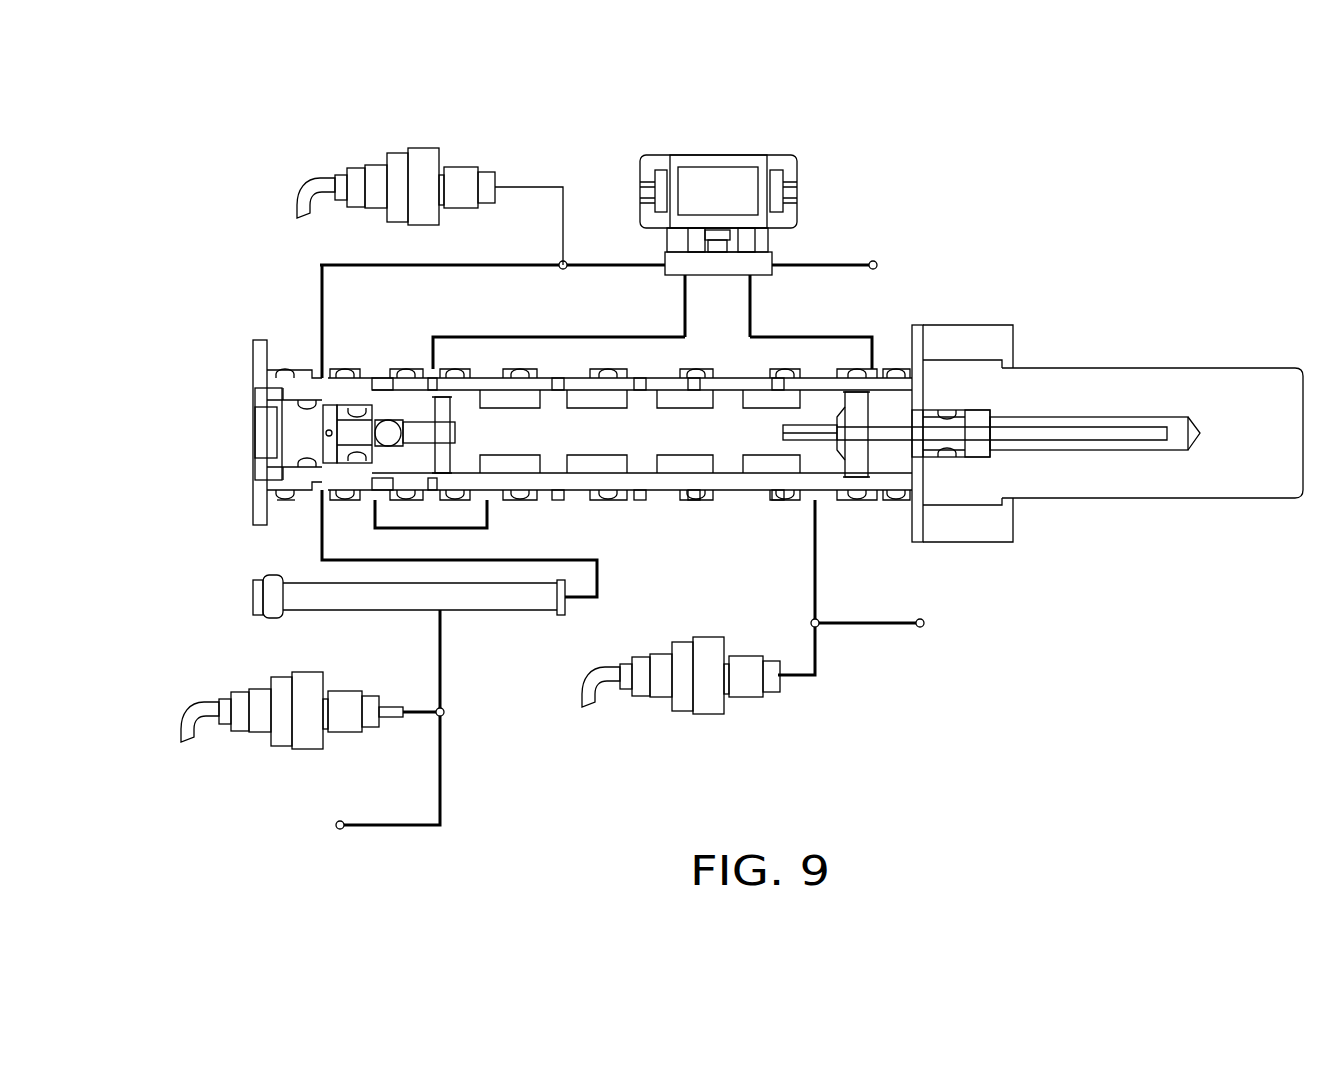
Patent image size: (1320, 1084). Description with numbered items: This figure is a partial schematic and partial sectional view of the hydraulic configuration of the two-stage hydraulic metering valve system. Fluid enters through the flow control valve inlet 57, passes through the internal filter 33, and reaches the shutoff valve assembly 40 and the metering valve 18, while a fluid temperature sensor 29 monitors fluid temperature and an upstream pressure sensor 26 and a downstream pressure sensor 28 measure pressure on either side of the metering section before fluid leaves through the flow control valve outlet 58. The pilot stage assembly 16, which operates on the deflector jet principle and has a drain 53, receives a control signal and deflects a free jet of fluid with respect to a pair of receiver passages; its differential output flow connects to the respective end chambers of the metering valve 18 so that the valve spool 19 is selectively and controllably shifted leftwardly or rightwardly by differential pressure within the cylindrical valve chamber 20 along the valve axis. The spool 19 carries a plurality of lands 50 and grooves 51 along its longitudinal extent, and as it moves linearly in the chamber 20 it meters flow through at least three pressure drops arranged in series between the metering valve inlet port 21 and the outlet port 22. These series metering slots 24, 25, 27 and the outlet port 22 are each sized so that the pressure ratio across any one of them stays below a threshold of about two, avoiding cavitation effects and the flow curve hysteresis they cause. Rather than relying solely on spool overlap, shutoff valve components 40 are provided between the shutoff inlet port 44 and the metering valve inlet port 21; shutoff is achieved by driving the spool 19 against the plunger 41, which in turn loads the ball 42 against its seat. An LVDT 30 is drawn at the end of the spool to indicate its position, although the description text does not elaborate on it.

The pilot stage assembly 16 is at (812, 169).
The metering valve 18 is at (1143, 321).
The valve spool 19 is at (769, 436).
The valve chamber 20 is at (748, 494).
The metering valve inlet port 21 is at (500, 503).
The outlet port 22 is at (824, 500).
The orifice (metering slot) 24 is at (548, 503).
The orifice (metering slot) 25 is at (630, 498).
The upstream pressure sensor 26 is at (450, 148).
The orifice (metering slot) 27 is at (724, 501).
The downstream pressure sensor 28 is at (784, 696).
The fluid temperature sensor 29 is at (218, 734).
The LVDT 30 is at (1163, 501).
The internal filter 33 is at (375, 616).
The shutoff valve assembly 40 is at (308, 351).
The plunger 41 is at (423, 419).
The ball 42 is at (388, 419).
The shutoff inlet port 44 is at (315, 501).
The lands 50 is at (637, 390).
The grooves 51 is at (777, 390).
The drain 53 is at (874, 256).
The flow control valve inlet 57 is at (349, 816).
The flow control valve outlet 58 is at (925, 636).